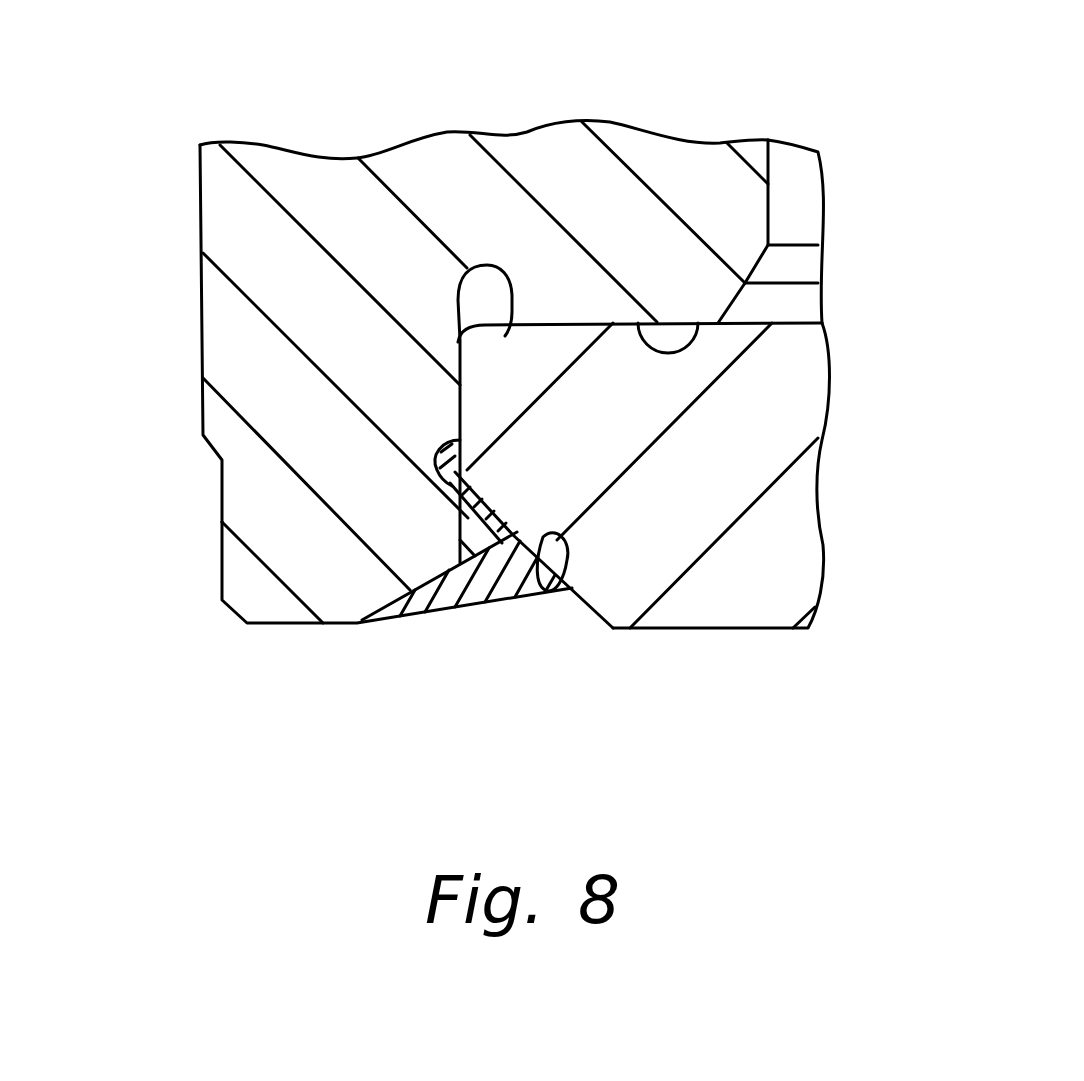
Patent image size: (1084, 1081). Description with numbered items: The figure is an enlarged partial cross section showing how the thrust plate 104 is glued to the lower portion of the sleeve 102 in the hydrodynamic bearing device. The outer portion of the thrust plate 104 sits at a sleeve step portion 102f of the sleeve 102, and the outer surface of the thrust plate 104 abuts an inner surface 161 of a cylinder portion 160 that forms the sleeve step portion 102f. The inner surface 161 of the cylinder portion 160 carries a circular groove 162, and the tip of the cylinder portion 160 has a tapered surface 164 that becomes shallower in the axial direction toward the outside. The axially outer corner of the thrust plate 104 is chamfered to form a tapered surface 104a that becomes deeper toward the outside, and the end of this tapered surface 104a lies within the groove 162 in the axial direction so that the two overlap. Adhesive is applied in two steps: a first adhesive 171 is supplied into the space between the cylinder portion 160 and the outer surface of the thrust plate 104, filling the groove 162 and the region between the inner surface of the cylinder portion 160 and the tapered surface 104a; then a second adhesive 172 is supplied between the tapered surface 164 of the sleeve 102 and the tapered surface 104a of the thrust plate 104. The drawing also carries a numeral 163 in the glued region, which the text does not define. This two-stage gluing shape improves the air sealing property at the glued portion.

The sleeve 102 is at (305, 217).
The sleeve step portion 102f is at (695, 335).
The thrust plate 104 is at (773, 555).
The tapered surface 104a is at (548, 592).
The cylinder portion 160 is at (305, 578).
The inner surface 161 is at (510, 295).
The circular groove 162 is at (448, 480).
The seal body 163 is at (498, 562).
The tapered surface 164 is at (410, 588).
The first adhesive 171 is at (483, 515).
The second adhesive 172 is at (548, 534).